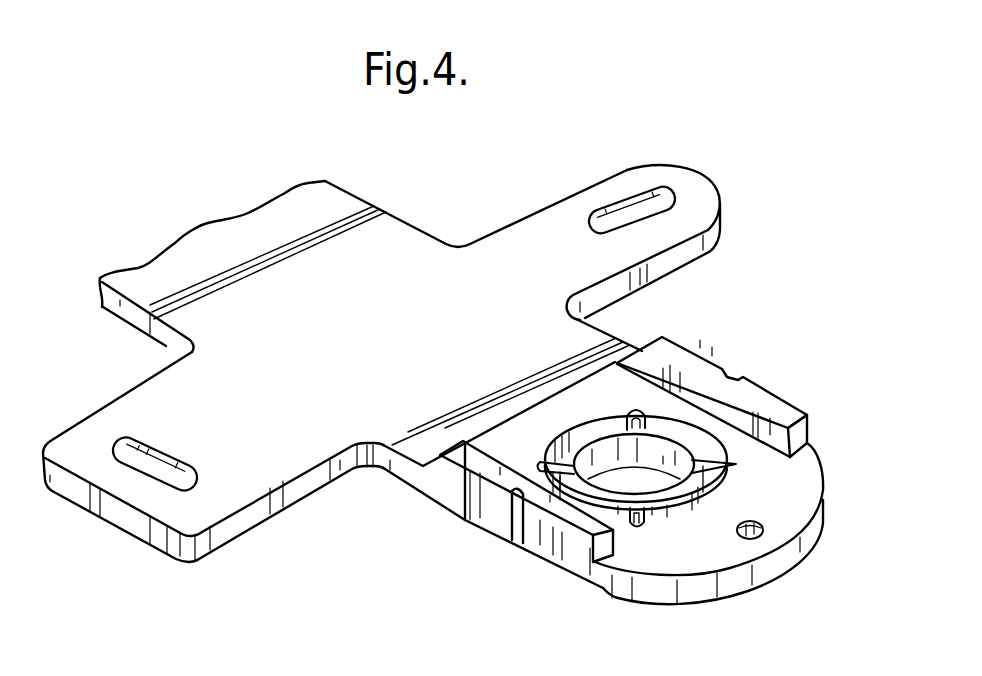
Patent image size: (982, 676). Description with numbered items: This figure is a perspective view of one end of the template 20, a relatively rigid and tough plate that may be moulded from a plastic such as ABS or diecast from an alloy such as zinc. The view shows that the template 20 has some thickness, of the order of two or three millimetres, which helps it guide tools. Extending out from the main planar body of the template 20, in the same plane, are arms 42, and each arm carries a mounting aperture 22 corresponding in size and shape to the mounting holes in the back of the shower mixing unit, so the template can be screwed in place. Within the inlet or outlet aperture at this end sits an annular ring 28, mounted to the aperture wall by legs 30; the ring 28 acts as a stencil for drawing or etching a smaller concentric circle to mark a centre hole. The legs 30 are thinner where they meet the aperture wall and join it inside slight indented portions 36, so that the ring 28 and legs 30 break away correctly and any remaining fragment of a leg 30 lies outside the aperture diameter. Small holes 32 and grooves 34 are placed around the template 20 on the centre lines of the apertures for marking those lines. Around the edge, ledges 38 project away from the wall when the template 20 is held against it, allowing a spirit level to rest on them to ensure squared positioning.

The template 20 is at (387, 236).
The mounting apertures 22 is at (160, 477).
The annular rings 28 is at (663, 493).
The legs 30 is at (712, 470).
The small holes 32 is at (764, 528).
The grooves 34 is at (513, 513).
The indented portions 36 is at (738, 465).
The ledges 38 is at (753, 395).
The arms 42 is at (167, 403).